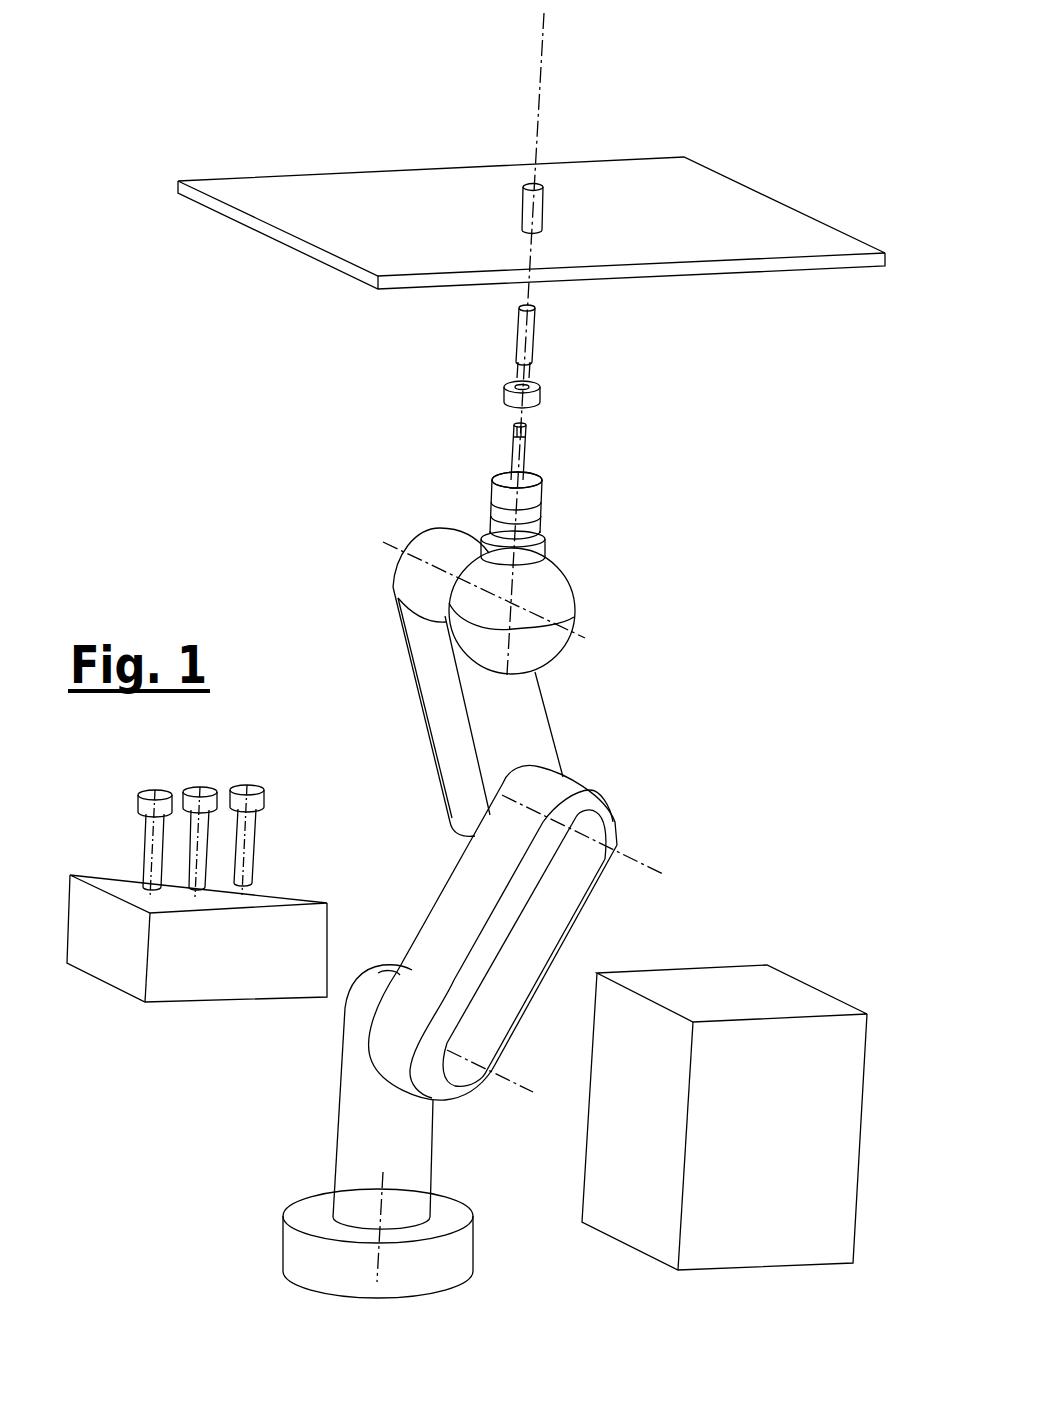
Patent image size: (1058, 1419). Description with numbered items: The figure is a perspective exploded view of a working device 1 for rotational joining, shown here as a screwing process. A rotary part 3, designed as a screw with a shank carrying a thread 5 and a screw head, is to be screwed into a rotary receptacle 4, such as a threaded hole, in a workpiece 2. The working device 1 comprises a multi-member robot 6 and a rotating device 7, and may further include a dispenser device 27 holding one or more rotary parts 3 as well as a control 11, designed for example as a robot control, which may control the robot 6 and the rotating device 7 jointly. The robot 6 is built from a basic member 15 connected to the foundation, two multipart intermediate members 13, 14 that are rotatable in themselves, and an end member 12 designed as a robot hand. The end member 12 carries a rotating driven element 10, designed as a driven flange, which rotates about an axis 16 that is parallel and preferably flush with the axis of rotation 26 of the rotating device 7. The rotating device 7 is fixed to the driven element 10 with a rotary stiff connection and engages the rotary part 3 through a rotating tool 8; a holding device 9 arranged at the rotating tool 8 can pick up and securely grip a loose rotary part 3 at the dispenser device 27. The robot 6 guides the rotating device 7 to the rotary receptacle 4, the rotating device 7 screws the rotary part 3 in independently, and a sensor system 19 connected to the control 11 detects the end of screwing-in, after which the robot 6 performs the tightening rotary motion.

The working device 1 is at (720, 635).
The workpiece 2 is at (727, 218).
The rotary part 3 is at (529, 394).
The rotary receptacle 4 is at (522, 209).
The thread 5 is at (515, 327).
The multi-member robot 6 is at (328, 1170).
The rotating device 7 is at (561, 489).
The rotating tool 8 is at (474, 442).
The holding device 9 is at (513, 437).
The rotating driven element 10 is at (537, 553).
The control 11 is at (765, 995).
The end member 12 is at (540, 643).
The intermediate member 13 is at (452, 725).
The intermediate member 14 is at (497, 875).
The basic member 15 is at (403, 1122).
The axis 16 is at (517, 480).
The sensor system 19 is at (538, 570).
The axis of rotation 26 is at (492, 508).
The dispenser device 27 is at (130, 960).